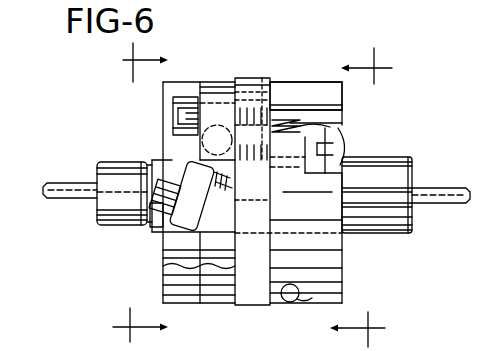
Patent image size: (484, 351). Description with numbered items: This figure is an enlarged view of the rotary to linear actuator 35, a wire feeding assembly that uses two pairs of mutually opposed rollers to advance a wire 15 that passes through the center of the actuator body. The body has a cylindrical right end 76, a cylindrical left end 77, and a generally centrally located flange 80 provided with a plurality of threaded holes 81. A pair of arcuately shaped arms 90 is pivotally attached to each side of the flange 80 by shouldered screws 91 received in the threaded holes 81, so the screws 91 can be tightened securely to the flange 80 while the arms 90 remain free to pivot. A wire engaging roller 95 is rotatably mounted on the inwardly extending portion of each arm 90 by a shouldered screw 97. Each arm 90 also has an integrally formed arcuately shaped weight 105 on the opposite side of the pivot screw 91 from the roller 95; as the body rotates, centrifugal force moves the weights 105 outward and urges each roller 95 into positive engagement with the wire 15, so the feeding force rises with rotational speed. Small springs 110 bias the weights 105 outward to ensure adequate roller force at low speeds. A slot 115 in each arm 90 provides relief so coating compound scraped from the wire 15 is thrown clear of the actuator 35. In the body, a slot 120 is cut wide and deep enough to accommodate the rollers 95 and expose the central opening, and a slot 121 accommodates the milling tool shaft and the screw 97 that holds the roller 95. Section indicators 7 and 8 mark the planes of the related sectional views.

The section line 7- 7 is at (134, 192).
The section line 8- 8 is at (368, 197).
The wire 15 is at (65, 192).
The rotary to linear actuator 35 is at (285, 62).
The cylindrical right end 76 is at (397, 222).
The cylindrical left end 77 is at (107, 183).
The flange 80 is at (248, 78).
The threaded holes 81 is at (262, 78).
The arcuately shaped arms 90 is at (161, 284).
The screws 91 is at (170, 102).
The wire engaging roller 95 is at (160, 162).
The screws 97 is at (165, 243).
The arcuately shaped weight 105 is at (205, 252).
The springs 110 is at (283, 112).
The slot 115 is at (296, 292).
The slot 120 is at (148, 167).
The slot 121 is at (150, 222).